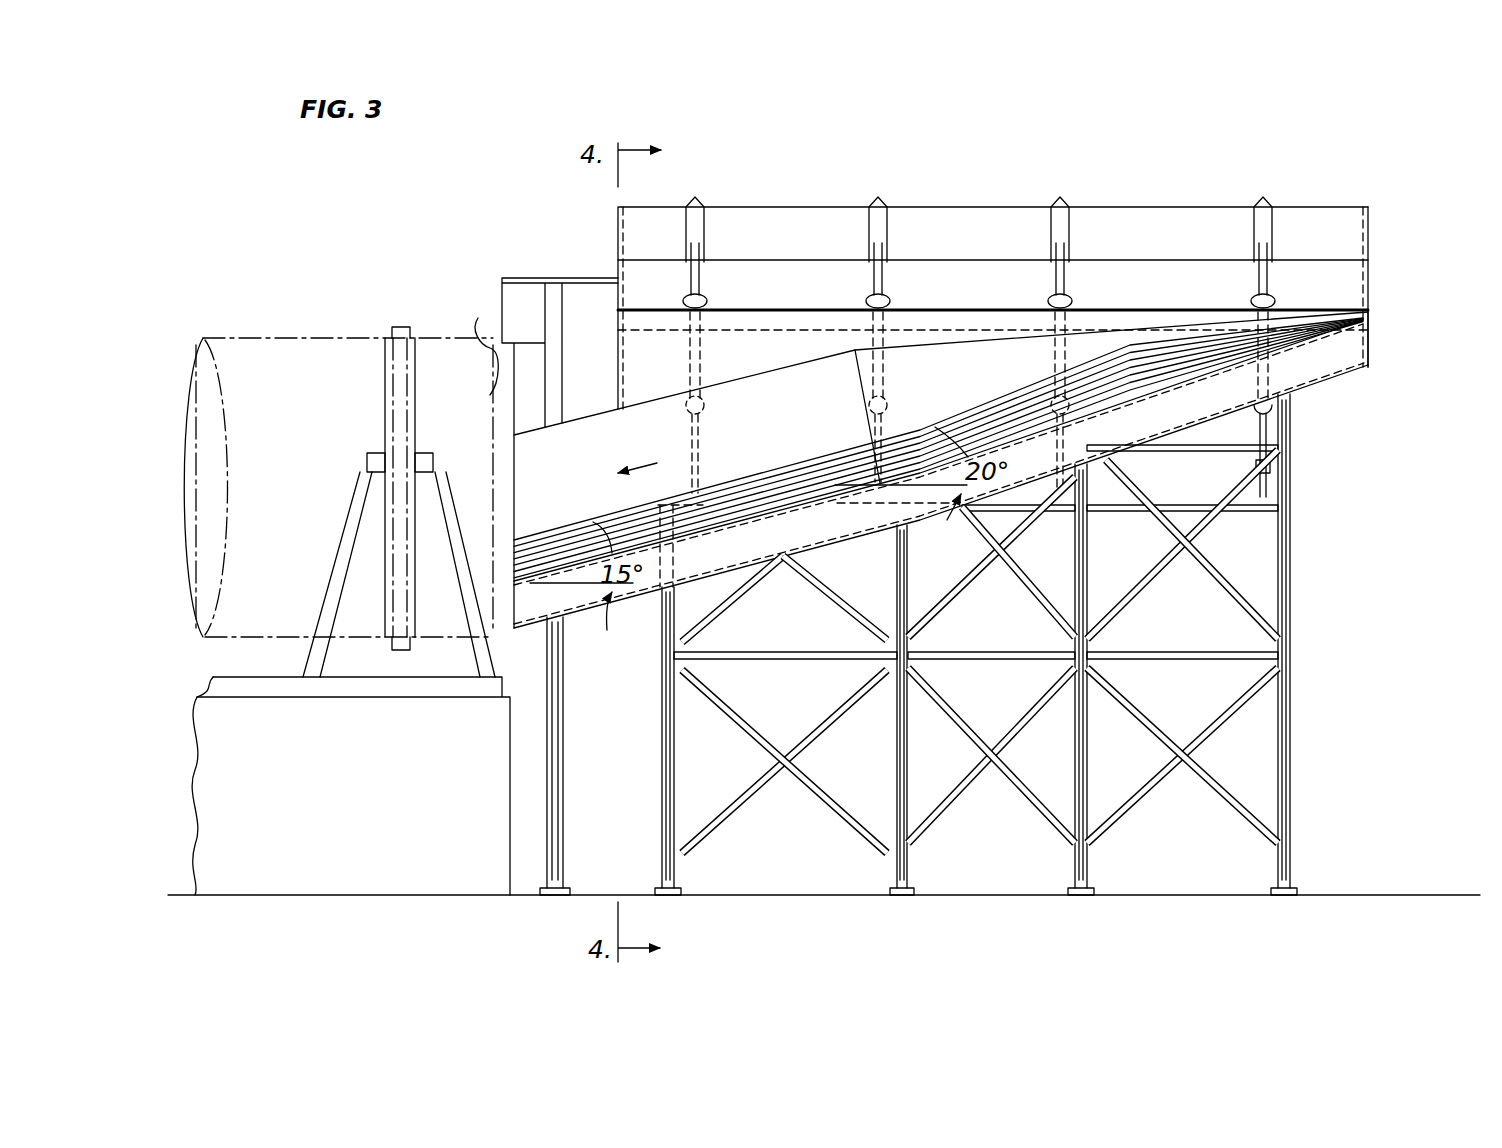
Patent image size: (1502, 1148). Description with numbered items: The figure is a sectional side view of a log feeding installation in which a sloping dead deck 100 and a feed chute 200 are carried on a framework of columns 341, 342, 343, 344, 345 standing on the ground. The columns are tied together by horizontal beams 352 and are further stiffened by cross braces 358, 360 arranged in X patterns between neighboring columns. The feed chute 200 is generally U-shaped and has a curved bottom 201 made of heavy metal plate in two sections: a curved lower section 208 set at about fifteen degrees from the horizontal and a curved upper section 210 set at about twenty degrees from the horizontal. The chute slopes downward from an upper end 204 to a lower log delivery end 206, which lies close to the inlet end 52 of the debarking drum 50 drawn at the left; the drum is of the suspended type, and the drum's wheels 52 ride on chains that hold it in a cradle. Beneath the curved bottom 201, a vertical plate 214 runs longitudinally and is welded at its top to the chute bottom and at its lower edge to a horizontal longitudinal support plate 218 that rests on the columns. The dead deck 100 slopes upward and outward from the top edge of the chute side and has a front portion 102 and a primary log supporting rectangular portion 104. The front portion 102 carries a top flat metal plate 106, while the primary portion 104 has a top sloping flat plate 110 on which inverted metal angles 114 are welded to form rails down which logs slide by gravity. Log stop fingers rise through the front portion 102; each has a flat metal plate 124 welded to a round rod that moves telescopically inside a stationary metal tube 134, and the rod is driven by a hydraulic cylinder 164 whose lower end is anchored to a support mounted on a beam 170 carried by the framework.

The debarking drum 50 is at (281, 326).
The inlet end 52 is at (476, 460).
The dead deck 100 is at (993, 256).
The front portion 102 is at (1143, 280).
The primary log supporting rectangular portion 104 is at (815, 224).
The top flat metal plate 106 is at (980, 296).
The top sloping flat plate 110 is at (1320, 217).
The inverted metal angles 114 is at (702, 222).
The flat metal plate 124 is at (703, 282).
The stationary metal tube 134 is at (1068, 357).
The hydraulic cylinder 164 is at (1293, 478).
The beam 170 is at (1183, 502).
The feed chute 200 is at (602, 390).
The curved bottom 201 is at (736, 378).
The upper end 204 is at (1342, 323).
The lower log delivery end 206 is at (555, 544).
The curved lower section 208 is at (938, 448).
The curved upper section 210 is at (1005, 397).
The vertical plate 214 is at (1356, 355).
The horizontal longitudinal support plate 218 is at (1322, 382).
The column 341 is at (560, 752).
The column 342 is at (661, 782).
The column 343 is at (895, 765).
The column 344 is at (1075, 745).
The column 345 is at (1277, 740).
The horizontal beam 352 is at (756, 660).
The cross brace 358 is at (980, 655).
The cross brace 360 is at (836, 598).